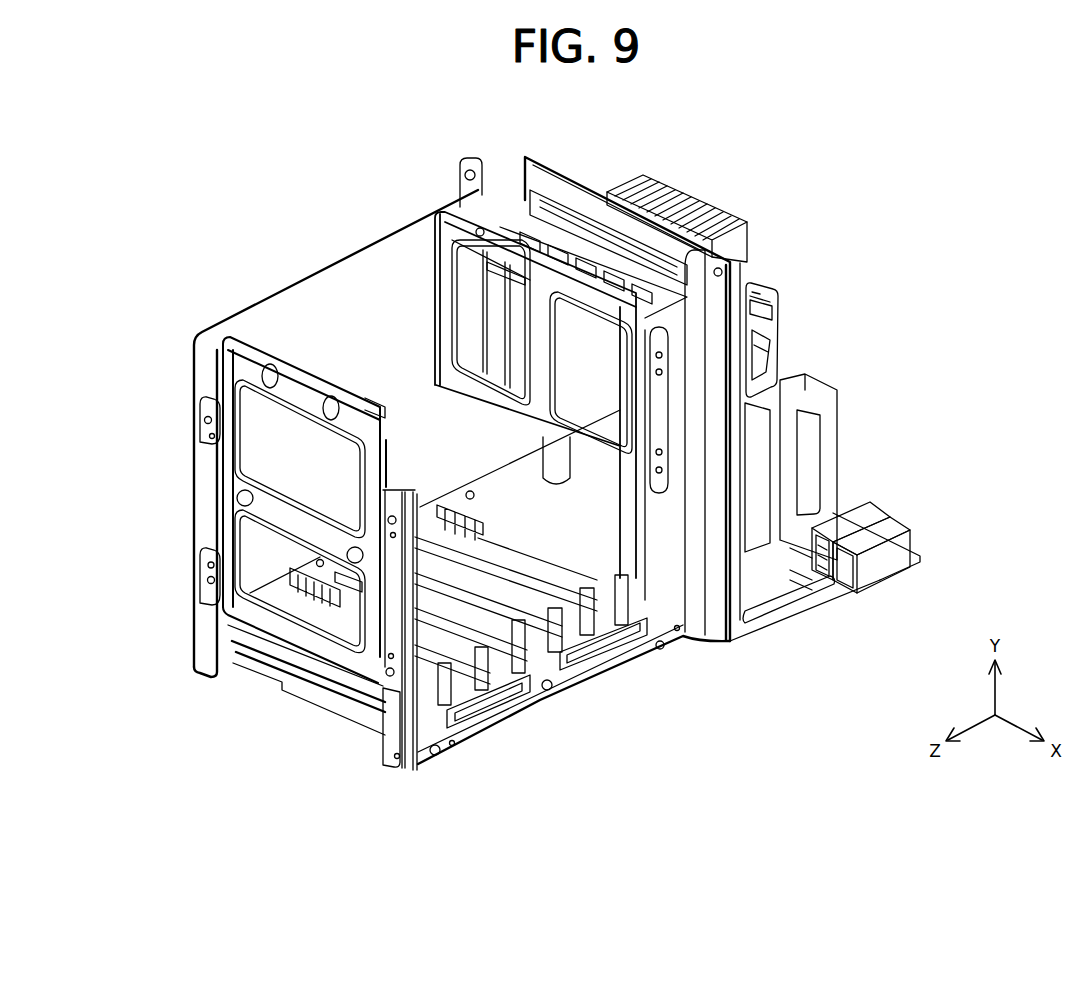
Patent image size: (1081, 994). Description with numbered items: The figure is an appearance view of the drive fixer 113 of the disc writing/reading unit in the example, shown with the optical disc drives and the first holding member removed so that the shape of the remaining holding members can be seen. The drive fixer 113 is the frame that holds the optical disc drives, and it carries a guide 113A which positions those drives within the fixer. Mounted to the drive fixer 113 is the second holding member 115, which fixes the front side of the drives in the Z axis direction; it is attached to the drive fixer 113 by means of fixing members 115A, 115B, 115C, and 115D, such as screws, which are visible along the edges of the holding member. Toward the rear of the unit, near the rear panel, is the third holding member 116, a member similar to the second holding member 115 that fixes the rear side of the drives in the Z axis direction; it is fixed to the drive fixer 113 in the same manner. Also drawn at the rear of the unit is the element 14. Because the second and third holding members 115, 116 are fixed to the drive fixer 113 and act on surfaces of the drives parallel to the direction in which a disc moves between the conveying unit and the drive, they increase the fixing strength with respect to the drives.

The drive fixer 113 is at (270, 313).
The guide 113A is at (477, 648).
The third holding member 116 is at (447, 225).
The second holding member 115 is at (228, 507).
The fixing member 115A is at (206, 425).
The fixing member 115B is at (208, 580).
The fixing member 115C is at (389, 676).
The fixing member 115D is at (393, 520).
The connector unit 14 is at (762, 288).